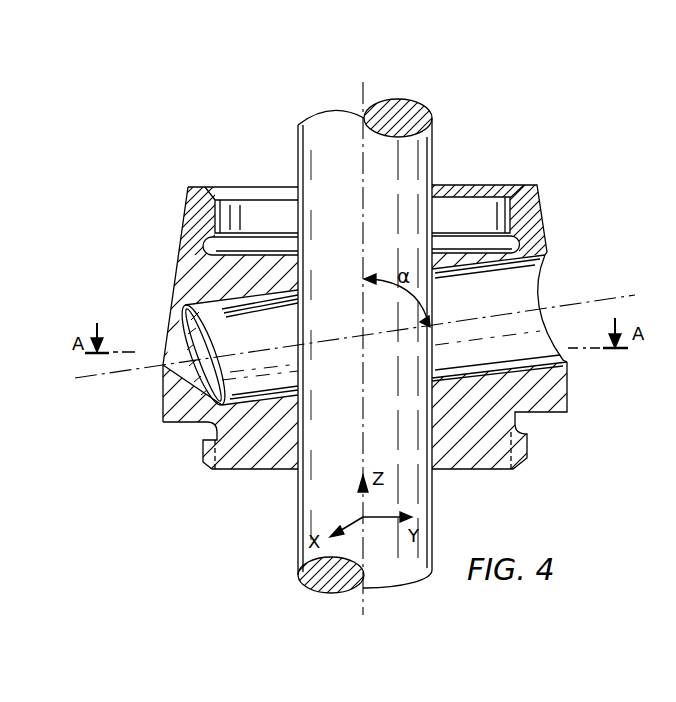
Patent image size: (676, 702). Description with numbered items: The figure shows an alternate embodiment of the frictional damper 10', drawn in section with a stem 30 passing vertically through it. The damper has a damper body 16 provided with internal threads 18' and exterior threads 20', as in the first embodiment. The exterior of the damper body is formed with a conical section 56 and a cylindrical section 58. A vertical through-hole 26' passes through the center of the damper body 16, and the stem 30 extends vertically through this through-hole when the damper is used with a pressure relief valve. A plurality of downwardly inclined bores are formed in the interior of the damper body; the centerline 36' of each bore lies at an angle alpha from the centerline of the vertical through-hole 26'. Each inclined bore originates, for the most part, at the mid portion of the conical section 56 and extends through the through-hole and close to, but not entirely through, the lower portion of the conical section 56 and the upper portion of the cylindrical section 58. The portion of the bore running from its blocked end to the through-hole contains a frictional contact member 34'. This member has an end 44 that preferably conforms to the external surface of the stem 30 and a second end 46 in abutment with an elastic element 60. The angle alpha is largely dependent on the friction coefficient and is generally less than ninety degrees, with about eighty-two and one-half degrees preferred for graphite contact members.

The frictional damper 10' is at (335, 315).
The damper body 16 is at (182, 257).
The internal threads 18' is at (361, 200).
The exterior threads 20' is at (546, 460).
The vertical through-hole 26' is at (486, 425).
The stem 30 is at (310, 157).
The frictional contact member 34' is at (217, 419).
The centerline of a bore 36' is at (355, 316).
The end of frictional contact member 44 is at (284, 342).
The second end of frictional contact member 46 is at (283, 392).
The conical section 56 is at (175, 268).
The cylindrical section 58 is at (365, 97).
The elastic element 60 is at (187, 345).